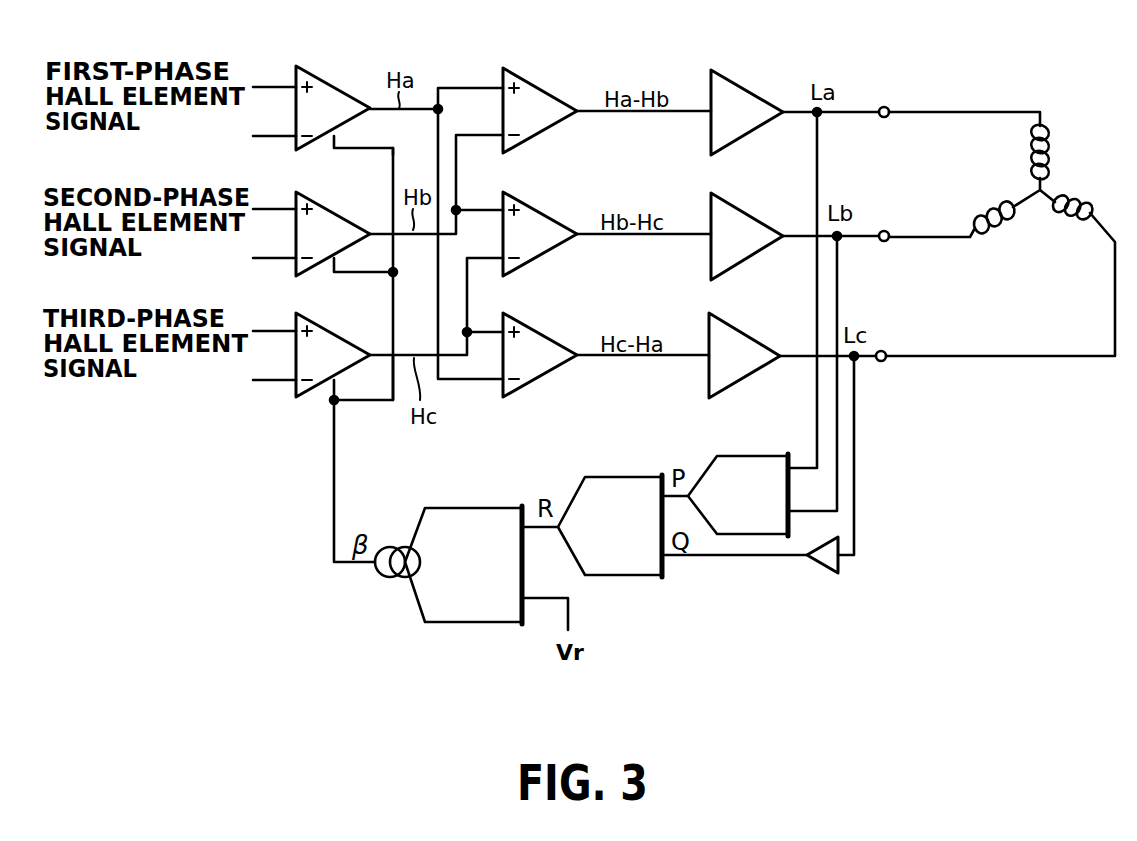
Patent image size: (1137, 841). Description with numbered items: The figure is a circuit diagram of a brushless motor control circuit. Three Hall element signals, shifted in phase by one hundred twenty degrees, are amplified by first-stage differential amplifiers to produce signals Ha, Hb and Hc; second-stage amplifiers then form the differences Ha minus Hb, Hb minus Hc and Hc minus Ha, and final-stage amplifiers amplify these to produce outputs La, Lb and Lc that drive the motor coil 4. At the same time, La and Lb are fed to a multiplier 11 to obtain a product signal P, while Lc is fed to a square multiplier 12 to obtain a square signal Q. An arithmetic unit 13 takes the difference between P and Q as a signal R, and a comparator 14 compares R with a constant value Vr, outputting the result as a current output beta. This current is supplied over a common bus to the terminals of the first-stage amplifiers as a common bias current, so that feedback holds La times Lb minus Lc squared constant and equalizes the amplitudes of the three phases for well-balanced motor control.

The motor coil 4 is at (1056, 189).
The multiplier 11 is at (765, 456).
The square multiplier 12 is at (820, 576).
The arithmetic unit 13 is at (627, 477).
The comparator 14 is at (483, 508).